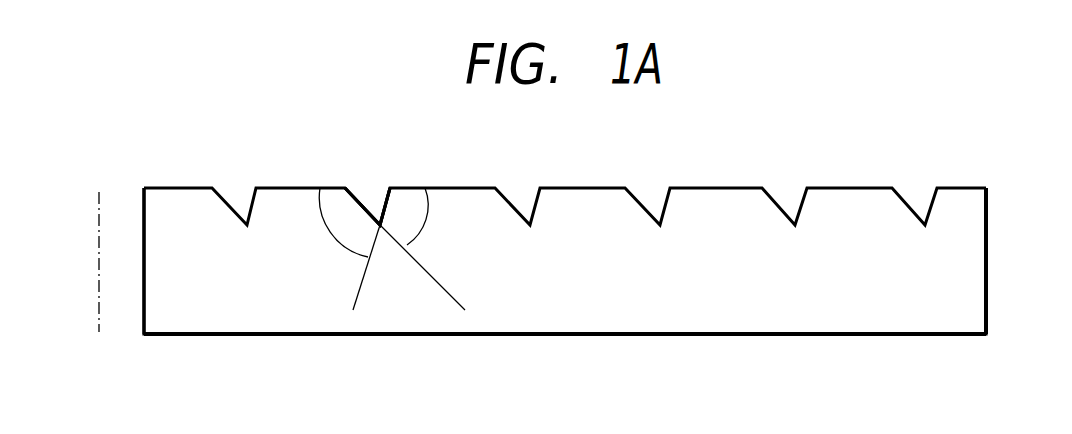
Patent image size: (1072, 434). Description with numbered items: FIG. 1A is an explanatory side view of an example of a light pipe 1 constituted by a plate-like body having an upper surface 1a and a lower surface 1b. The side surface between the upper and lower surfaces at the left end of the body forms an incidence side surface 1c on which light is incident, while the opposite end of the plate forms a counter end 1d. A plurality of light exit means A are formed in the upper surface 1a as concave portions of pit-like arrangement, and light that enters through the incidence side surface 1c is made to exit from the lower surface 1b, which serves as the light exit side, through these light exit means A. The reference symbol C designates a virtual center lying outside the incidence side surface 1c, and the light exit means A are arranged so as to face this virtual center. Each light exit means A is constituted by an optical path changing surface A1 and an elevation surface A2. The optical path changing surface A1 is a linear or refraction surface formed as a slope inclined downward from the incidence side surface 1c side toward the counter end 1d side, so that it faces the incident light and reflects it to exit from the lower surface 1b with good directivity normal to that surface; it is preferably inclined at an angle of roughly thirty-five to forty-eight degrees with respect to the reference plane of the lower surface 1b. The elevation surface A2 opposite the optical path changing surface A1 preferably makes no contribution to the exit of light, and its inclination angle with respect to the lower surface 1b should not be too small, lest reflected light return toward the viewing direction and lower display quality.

The light pipe 1 is at (972, 277).
The upper surface 1a is at (578, 188).
The lower surface 1b is at (593, 336).
The incidence side surface 1c is at (143, 312).
The counter end 1d is at (988, 213).
The virtual center C is at (99, 247).
The light exit means A is at (392, 187).
The optical path changing surface A1 is at (374, 213).
The elevation surface A2 is at (378, 215).